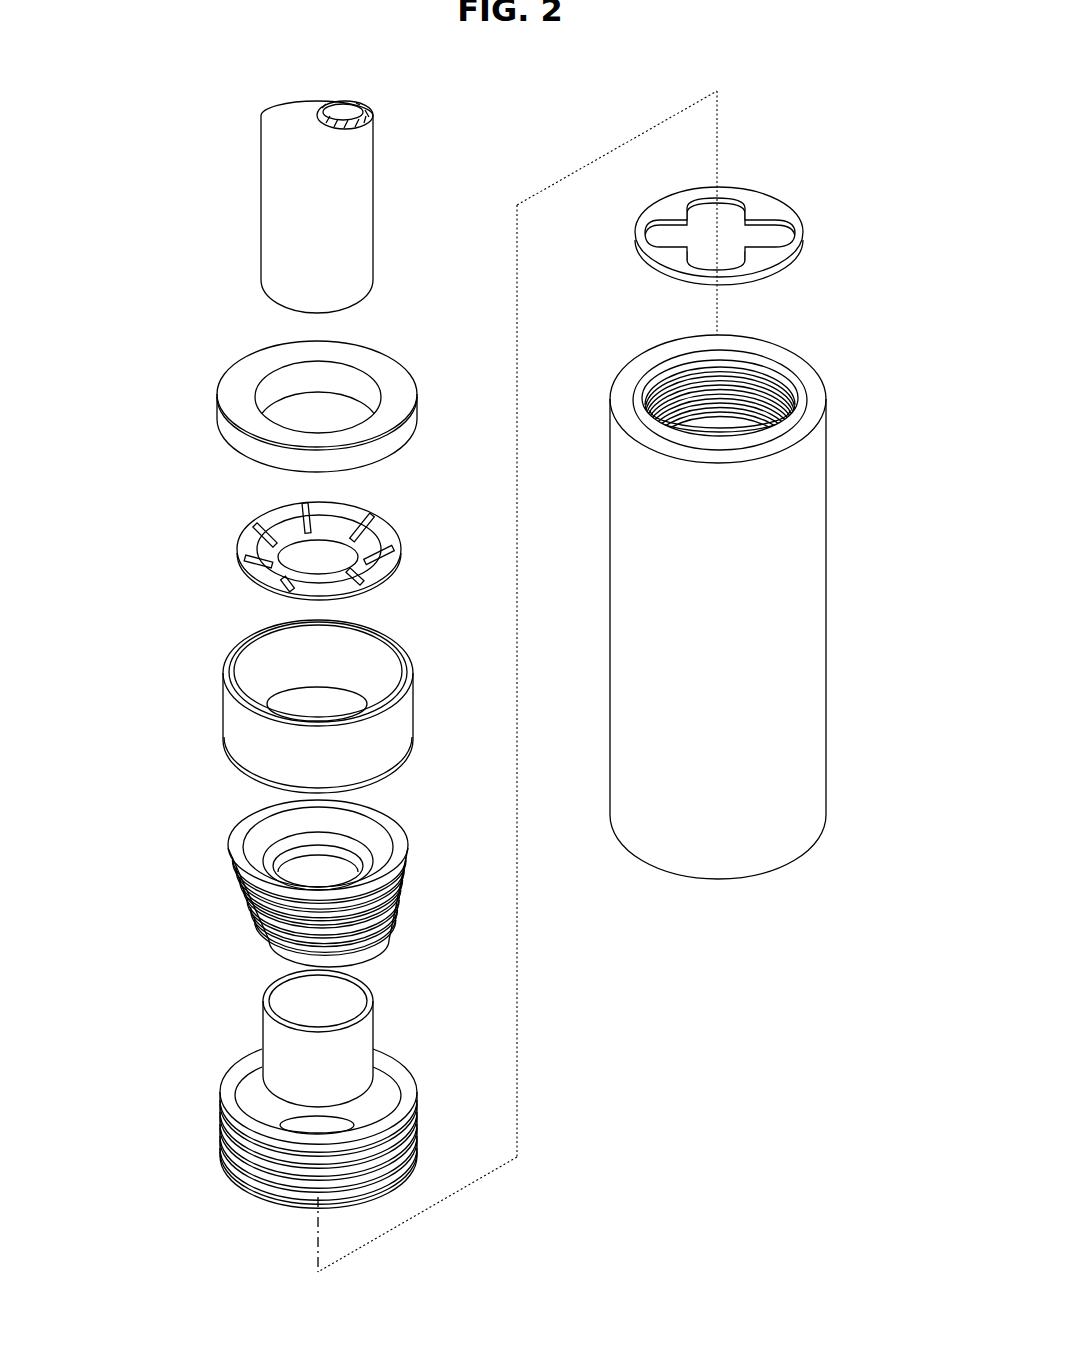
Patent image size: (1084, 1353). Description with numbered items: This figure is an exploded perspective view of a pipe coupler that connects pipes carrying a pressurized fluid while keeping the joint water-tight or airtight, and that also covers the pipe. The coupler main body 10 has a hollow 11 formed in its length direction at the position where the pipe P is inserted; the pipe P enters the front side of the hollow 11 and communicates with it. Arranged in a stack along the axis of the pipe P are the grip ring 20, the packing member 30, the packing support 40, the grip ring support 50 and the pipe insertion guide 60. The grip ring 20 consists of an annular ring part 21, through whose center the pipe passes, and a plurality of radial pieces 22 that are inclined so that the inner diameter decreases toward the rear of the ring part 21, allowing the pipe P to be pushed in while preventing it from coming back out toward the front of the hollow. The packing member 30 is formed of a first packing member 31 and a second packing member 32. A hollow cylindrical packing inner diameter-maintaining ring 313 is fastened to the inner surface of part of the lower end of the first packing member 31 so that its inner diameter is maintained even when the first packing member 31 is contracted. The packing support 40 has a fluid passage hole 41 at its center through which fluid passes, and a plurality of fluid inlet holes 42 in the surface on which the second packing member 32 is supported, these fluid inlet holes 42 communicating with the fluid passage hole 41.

The pipe P is at (226, 236).
The coupler main body 10 is at (782, 602).
The hollow 11 is at (728, 431).
The grip ring 20 is at (257, 551).
The ring part 21 is at (247, 545).
The radial pieces 22 is at (250, 580).
The packing member 30 is at (230, 1004).
The first packing member 31 is at (197, 912).
The packing inner diameter-maintaining ring 313 is at (270, 1022).
The second packing member 32 is at (269, 1089).
The packing support 40 is at (781, 219).
The fluid passage hole 41 is at (733, 229).
The fluid inlet holes 42 is at (700, 203).
The grip ring support 50 is at (186, 419).
The pipe insertion guide 60 is at (186, 707).